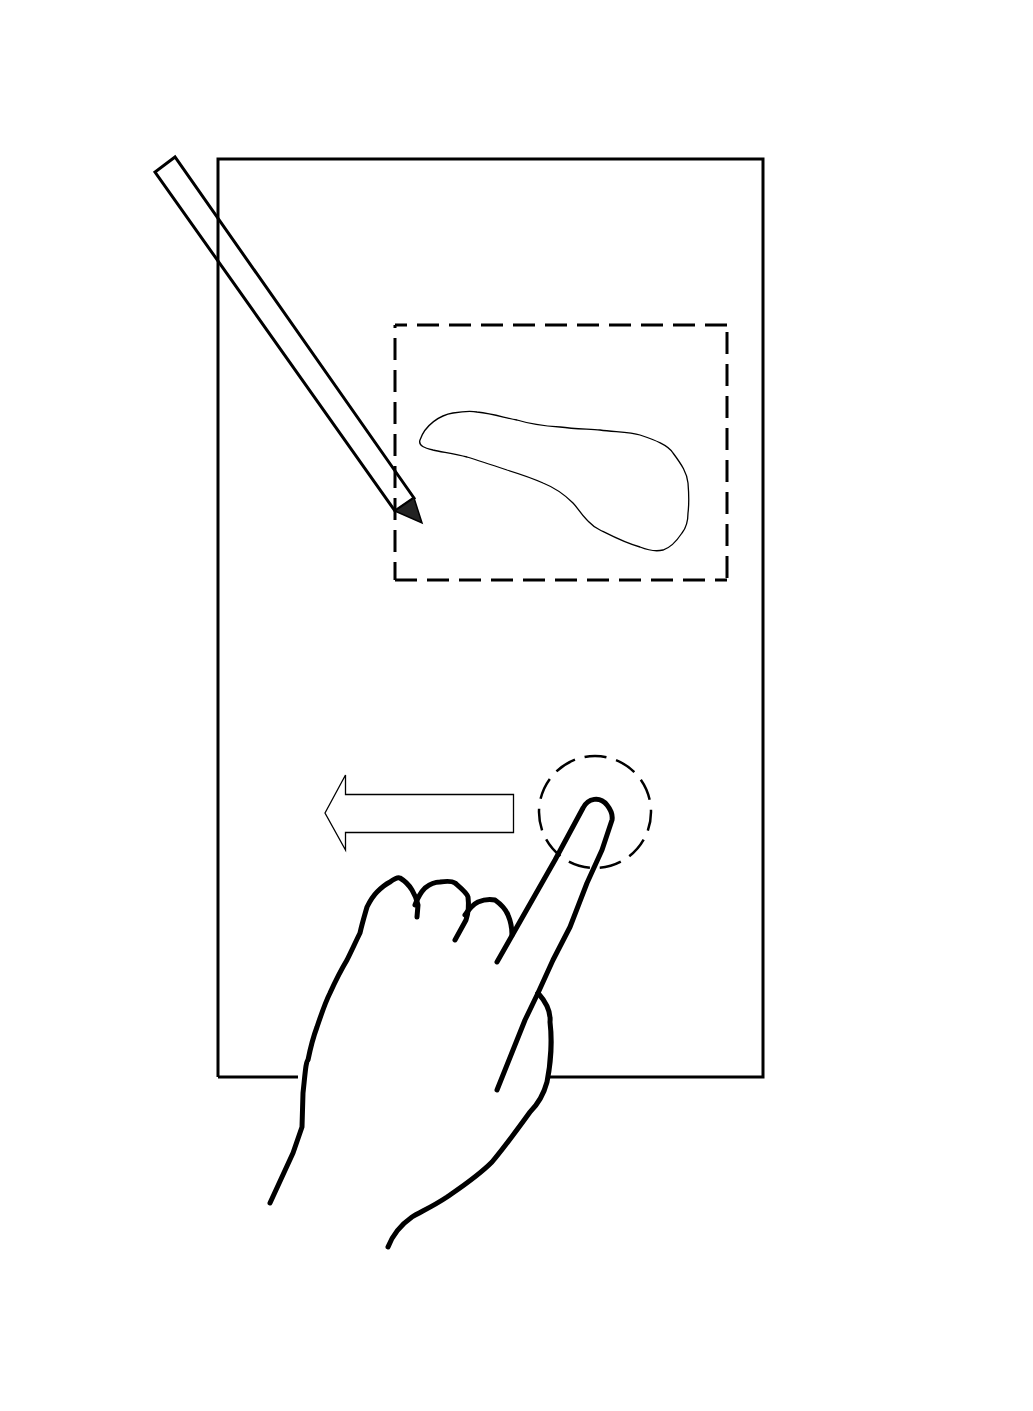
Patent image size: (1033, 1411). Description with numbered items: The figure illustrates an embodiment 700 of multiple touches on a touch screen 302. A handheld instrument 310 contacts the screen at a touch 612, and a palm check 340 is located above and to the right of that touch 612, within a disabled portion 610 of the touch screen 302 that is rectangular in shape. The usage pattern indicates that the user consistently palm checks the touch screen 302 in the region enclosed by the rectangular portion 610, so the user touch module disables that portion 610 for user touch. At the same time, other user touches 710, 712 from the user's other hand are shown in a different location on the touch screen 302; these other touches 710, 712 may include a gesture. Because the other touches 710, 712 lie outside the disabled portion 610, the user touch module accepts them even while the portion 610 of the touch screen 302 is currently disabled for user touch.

The touch interaction scenario 700 is at (132, 26).
The touch screen 302 is at (698, 153).
The handheld instrument 310 is at (271, 257).
The disabled portion 610 is at (616, 312).
The touch 612 is at (404, 526).
The palm check 340 is at (703, 515).
The user touch 710 is at (650, 880).
The user touch 712 is at (311, 814).